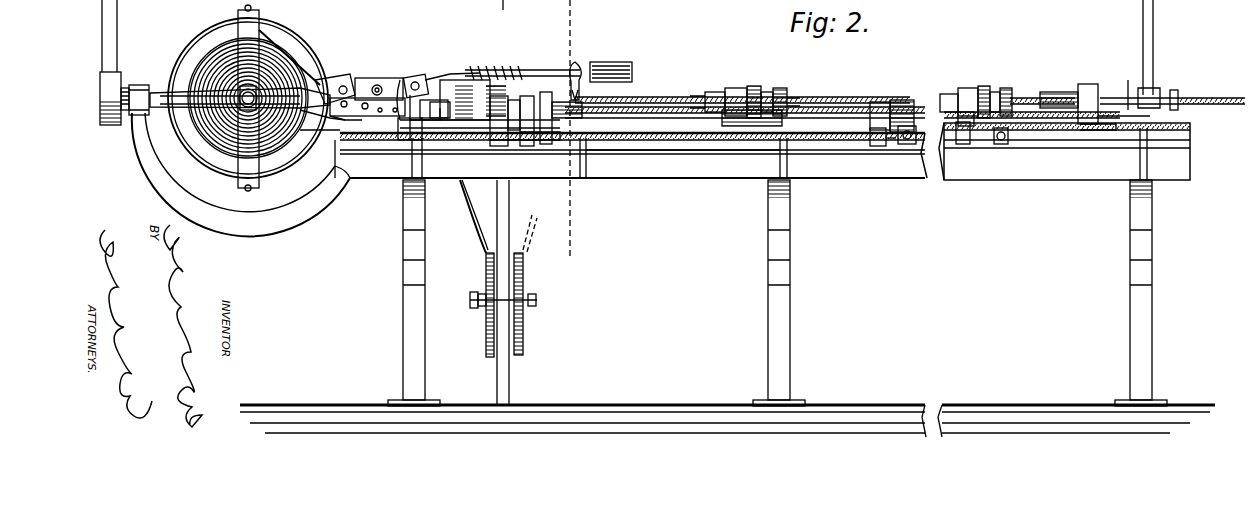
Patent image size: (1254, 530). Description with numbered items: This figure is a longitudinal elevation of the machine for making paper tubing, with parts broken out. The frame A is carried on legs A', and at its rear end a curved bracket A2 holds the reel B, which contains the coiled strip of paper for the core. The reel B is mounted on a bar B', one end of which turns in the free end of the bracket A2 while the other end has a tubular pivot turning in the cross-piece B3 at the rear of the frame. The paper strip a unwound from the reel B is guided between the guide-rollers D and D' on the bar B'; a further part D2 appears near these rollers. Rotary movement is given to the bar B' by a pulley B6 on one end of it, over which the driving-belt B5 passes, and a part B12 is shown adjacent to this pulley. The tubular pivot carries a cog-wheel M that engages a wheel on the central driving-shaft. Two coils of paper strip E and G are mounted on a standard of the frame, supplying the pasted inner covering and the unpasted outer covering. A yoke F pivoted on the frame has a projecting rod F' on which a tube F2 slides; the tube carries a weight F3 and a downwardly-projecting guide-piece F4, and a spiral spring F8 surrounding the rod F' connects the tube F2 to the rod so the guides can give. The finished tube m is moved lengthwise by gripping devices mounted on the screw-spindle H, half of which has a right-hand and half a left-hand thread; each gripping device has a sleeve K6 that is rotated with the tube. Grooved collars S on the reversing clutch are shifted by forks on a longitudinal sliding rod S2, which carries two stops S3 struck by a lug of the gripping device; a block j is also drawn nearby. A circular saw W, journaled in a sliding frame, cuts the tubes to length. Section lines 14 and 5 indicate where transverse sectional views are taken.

The frame A is at (745, 151).
The legs A' is at (408, 293).
The curved bracket A2 is at (258, 230).
The reel B is at (240, 98).
The bar B' is at (322, 125).
The cross-piece B3 is at (402, 80).
The driving-belt B5 is at (126, 36).
The pulley B6 is at (103, 91).
The bushing B12 is at (128, 84).
The paper strip a is at (350, 84).
The guide-roller D is at (379, 77).
The guide-roller D' is at (367, 106).
The bracket arm D2 is at (346, 121).
The yoke F is at (425, 92).
The projecting rod F' is at (452, 58).
The spiral spring F8 is at (497, 65).
The tube F2 is at (560, 72).
The guide-piece F4 is at (582, 69).
The weight F3 is at (611, 63).
The section line 14 is at (497, 5).
The section line 5 is at (570, 137).
The cog-wheel M is at (479, 122).
The circumferentially-grooved collar S is at (534, 126).
The longitudinal sliding rod S2 is at (683, 154).
The stops S3 is at (907, 150).
The block j is at (963, 133).
The screw-spindle H is at (657, 122).
The paper tube m is at (910, 94).
The sleeve K6 is at (766, 92).
The circular saw W is at (1109, 65).
The coil of paper strip E is at (498, 280).
The coil of paper strip G is at (526, 290).